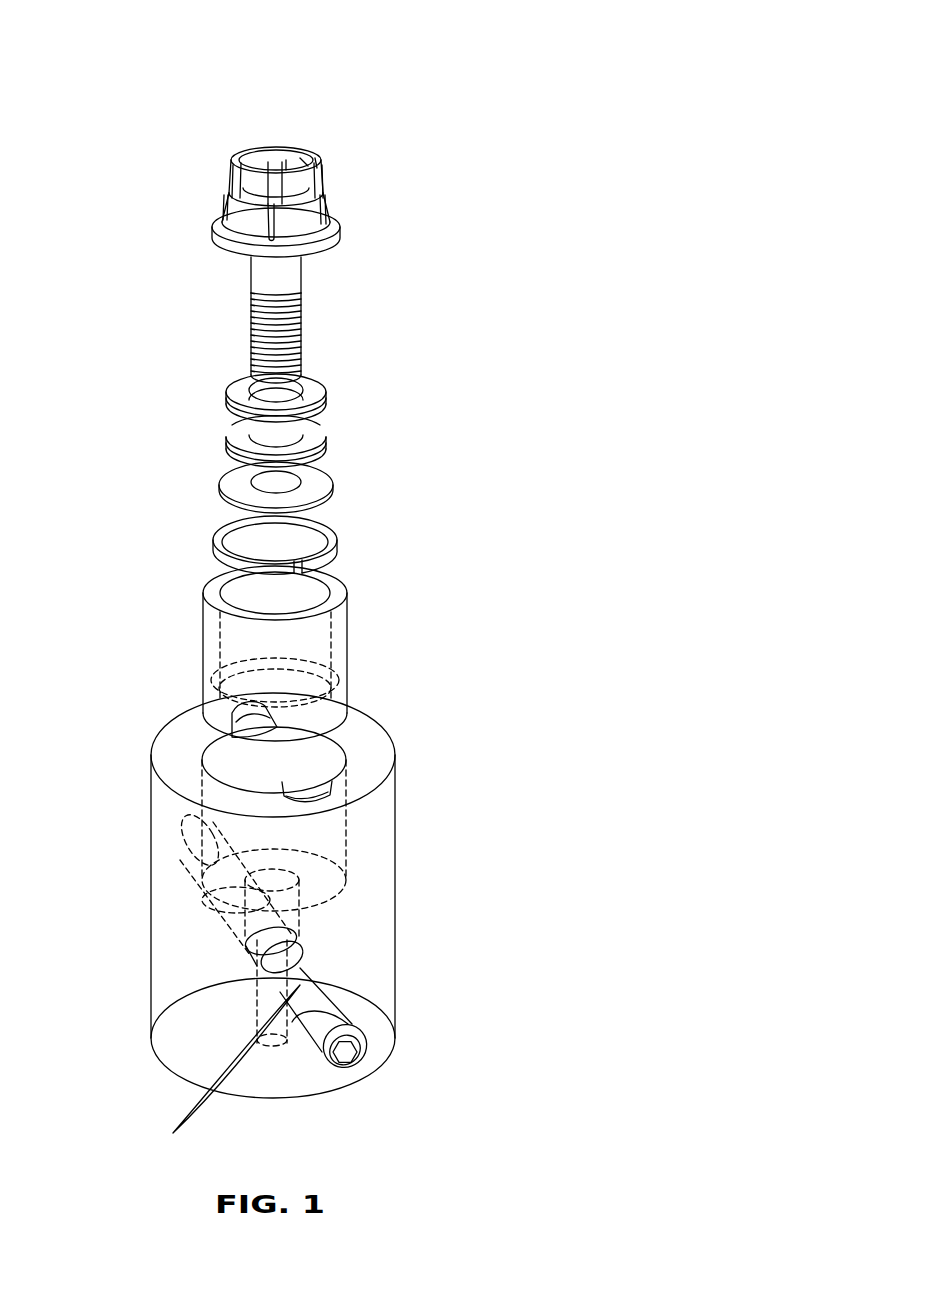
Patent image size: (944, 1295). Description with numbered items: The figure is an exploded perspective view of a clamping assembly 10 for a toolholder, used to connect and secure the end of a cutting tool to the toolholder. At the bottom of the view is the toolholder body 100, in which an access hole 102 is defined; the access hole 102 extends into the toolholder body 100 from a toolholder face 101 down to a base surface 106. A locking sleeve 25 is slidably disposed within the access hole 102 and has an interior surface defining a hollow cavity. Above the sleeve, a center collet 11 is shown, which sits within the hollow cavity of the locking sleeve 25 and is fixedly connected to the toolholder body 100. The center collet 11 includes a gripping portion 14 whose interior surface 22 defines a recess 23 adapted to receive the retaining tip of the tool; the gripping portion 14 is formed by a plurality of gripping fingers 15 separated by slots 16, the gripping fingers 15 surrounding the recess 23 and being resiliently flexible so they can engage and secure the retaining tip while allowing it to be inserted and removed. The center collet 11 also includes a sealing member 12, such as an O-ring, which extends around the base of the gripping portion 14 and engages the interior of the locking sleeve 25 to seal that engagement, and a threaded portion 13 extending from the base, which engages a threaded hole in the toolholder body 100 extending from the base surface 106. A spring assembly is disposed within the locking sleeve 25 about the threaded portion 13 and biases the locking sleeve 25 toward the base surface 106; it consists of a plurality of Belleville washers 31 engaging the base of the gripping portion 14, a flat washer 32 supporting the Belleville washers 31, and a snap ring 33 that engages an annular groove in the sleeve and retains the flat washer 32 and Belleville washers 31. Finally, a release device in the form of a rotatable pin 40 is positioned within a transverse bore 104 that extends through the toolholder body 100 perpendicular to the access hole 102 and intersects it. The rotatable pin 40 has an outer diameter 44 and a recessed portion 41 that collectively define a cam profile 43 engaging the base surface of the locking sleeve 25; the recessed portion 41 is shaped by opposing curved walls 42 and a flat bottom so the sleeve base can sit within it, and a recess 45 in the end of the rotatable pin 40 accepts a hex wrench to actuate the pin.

The clamping assembly 10 is at (575, 338).
The center collet 11 is at (290, 283).
The sealing member 12 is at (213, 232).
The threaded portion 13 is at (300, 342).
The gripping portion 14 is at (225, 170).
The gripping fingers 15 is at (307, 165).
The slots 16 is at (290, 157).
The interior surface 22 is at (318, 160).
The recess 23 is at (263, 177).
The locking sleeve 25 is at (348, 653).
The Belleville washers 31 is at (327, 382).
The flat washer 32 is at (322, 488).
The snap ring 33 is at (213, 536).
The rotatable pin 40 is at (322, 1030).
The recessed portion 41 is at (335, 1000).
The curved walls 42 is at (227, 1076).
The cam profile 43 is at (325, 880).
The outer diameter 44 is at (350, 1025).
The recess 45 is at (350, 1058).
The toolholder body 100 is at (397, 840).
The toolholder face 101 is at (363, 735).
The access hole 102 is at (244, 770).
The transverse bore 104 is at (243, 951).
The base surface 106 is at (314, 977).